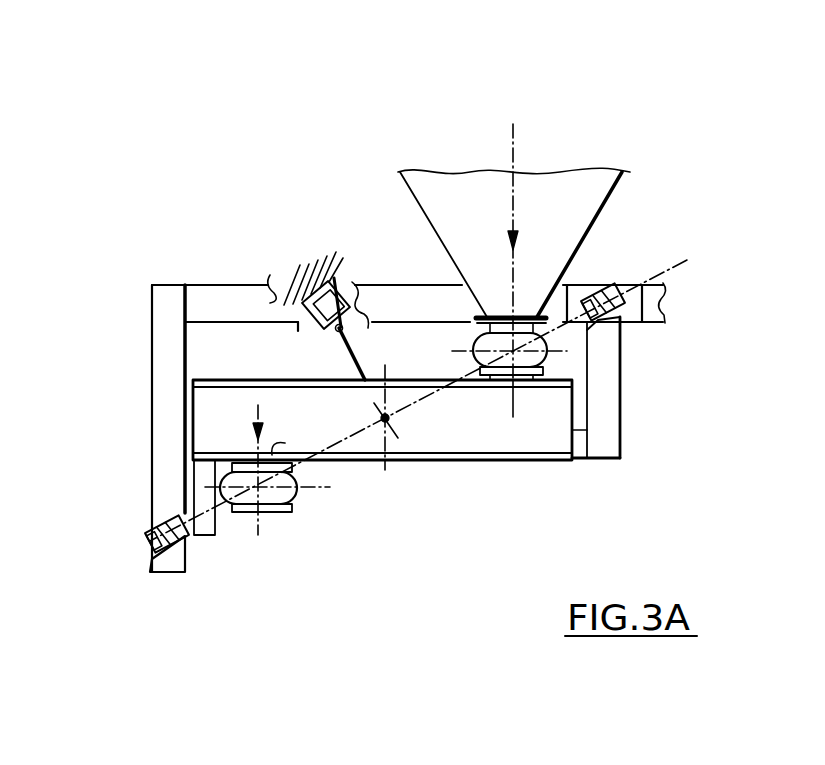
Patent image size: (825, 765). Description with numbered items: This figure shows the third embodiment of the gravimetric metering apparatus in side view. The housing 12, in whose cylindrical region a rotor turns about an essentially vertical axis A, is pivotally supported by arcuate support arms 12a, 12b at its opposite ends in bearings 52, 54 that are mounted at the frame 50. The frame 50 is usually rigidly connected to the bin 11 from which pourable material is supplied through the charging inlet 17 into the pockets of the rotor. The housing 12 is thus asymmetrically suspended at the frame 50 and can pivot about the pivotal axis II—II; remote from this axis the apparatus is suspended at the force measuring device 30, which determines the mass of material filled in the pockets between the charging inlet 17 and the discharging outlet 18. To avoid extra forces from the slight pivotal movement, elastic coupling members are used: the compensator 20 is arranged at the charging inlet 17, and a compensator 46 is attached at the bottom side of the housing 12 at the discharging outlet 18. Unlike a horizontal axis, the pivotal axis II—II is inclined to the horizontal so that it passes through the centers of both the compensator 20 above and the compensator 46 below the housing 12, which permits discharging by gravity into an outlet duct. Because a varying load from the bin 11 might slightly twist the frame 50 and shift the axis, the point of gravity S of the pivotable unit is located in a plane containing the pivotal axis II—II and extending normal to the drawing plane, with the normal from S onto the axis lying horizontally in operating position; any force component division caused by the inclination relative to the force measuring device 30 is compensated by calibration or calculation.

The frame 50 is at (222, 288).
The force measuring device 30 is at (357, 313).
The bin 11 is at (607, 205).
The bearing 54 is at (592, 288).
The compensator 20 is at (472, 349).
The charging inlet 17 is at (498, 390).
The housing 12 is at (537, 464).
The arcuate support arm 12a is at (618, 440).
The arcuate support arm 12b is at (216, 526).
The discharging outlet 18 is at (300, 464).
The compensator 46 is at (298, 493).
The bearing 52 is at (162, 518).
The vertical axis A is at (385, 465).
The point of gravity S is at (374, 417).
The pivotal axis II— II is at (659, 272).